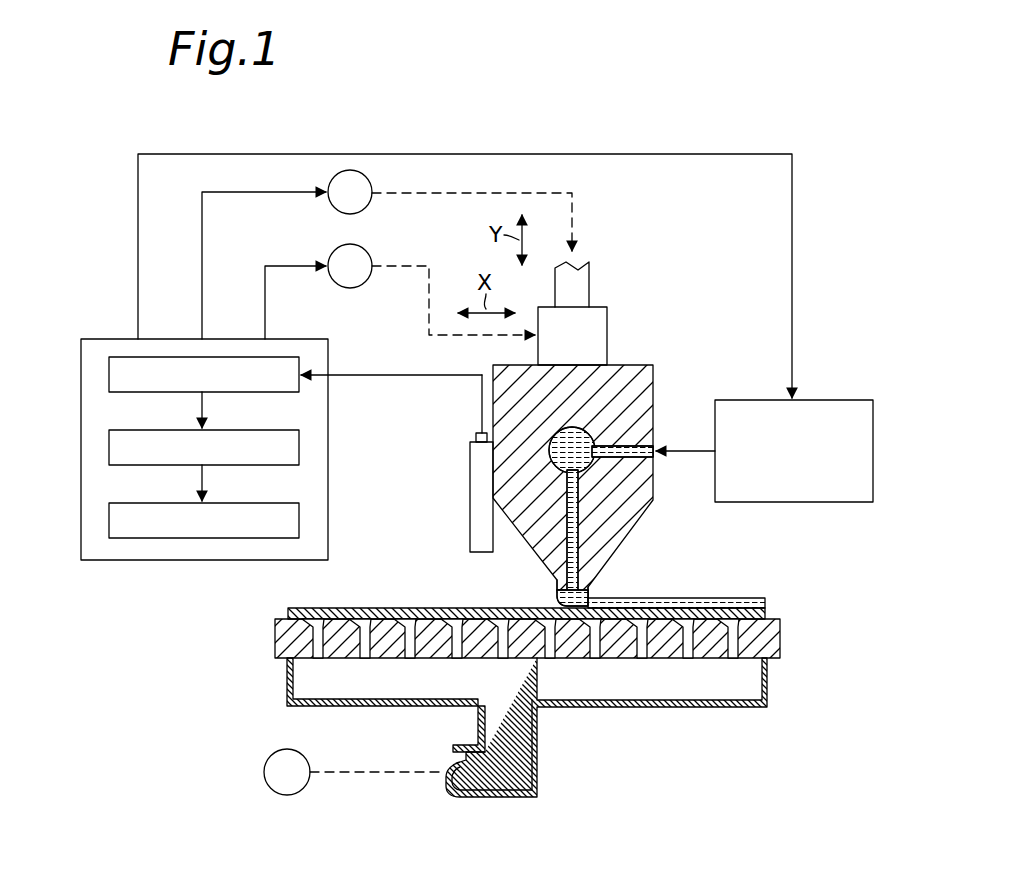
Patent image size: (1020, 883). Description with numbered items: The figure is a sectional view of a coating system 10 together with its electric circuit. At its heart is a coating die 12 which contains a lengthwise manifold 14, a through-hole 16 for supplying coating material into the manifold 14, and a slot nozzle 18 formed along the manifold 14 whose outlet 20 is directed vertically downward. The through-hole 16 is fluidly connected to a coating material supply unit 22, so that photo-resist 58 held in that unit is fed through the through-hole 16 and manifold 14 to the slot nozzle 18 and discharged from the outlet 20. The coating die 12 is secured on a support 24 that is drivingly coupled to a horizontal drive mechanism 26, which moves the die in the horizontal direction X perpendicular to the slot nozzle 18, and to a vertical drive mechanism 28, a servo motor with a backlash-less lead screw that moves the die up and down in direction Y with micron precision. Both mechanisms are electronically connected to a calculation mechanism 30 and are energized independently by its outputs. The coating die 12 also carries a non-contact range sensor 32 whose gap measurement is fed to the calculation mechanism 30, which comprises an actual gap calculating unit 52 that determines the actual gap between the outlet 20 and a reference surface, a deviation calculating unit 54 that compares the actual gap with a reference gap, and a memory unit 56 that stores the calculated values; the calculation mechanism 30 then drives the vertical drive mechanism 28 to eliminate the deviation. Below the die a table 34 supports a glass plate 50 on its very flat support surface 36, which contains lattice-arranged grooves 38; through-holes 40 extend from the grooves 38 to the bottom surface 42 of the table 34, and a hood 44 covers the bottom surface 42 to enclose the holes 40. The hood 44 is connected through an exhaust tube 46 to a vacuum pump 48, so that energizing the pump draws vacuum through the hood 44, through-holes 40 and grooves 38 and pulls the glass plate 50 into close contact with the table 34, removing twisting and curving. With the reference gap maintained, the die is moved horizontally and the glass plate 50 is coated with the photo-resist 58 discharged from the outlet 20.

The coating system 10 is at (797, 598).
The coating die 12 is at (641, 361).
The manifold 14 is at (594, 441).
The through-hole 16 is at (625, 458).
The slot nozzle 18 is at (580, 512).
The outlet 20 is at (583, 590).
The coating material supply unit 22 is at (815, 399).
The support 24 is at (603, 307).
The horizontal drive mechanism 26 is at (356, 288).
The vertical drive mechanism 28 is at (356, 214).
The calculation mechanism 30 is at (330, 448).
The non-contact range sensor 32 is at (469, 497).
The table 34 is at (562, 604).
The support surface 36 is at (402, 628).
The grooves 38 is at (732, 628).
The through-holes 40 is at (732, 662).
The bottom surface 42 is at (668, 662).
The hood 44 is at (600, 708).
The exhaust tube 46 is at (500, 797).
The vacuum pump 48 is at (283, 795).
The glass plate 50 is at (358, 607).
The actual gap calculating unit 52 is at (109, 372).
The deviation calculating unit 54 is at (109, 446).
The memory unit 56 is at (109, 530).
The photo-resist 58 is at (697, 598).